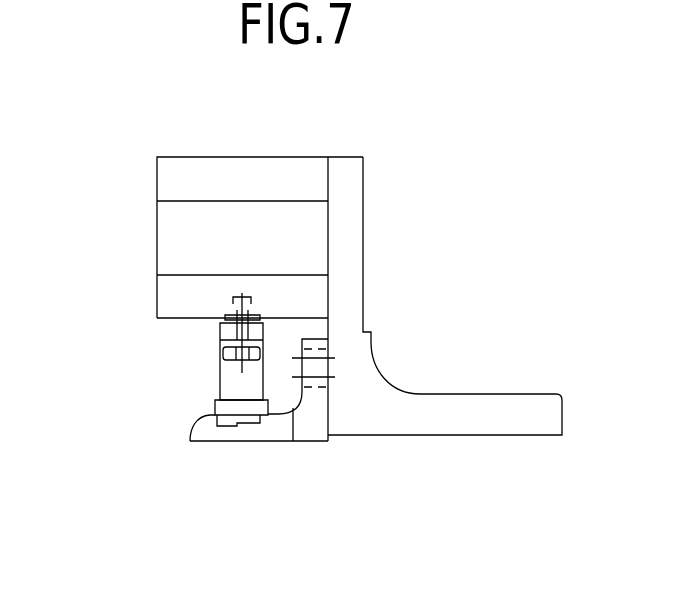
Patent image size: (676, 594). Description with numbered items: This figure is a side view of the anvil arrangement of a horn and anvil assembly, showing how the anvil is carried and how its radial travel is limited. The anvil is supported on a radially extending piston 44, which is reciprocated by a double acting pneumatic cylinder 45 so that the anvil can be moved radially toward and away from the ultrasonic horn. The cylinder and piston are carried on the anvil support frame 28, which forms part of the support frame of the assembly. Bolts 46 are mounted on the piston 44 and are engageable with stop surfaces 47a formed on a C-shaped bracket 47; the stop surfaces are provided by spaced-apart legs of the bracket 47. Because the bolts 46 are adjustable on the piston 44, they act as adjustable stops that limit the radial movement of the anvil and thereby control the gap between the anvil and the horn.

The anvil support frame 28 is at (363, 265).
The piston 44 is at (220, 382).
The double acting pneumatic cylinder 45 is at (157, 247).
The bolts 46 is at (223, 355).
The C-shaped bracket 47 is at (328, 415).
The stop surfaces 47a is at (217, 413).